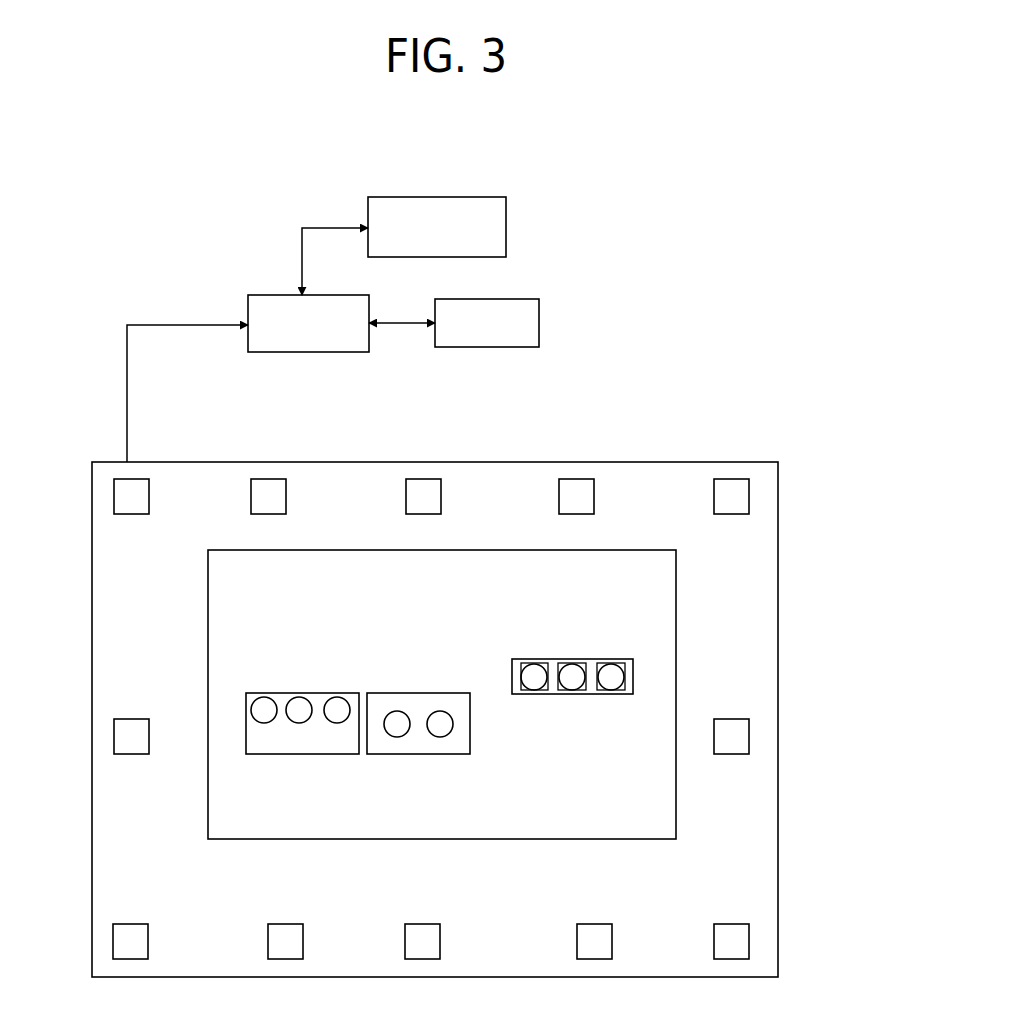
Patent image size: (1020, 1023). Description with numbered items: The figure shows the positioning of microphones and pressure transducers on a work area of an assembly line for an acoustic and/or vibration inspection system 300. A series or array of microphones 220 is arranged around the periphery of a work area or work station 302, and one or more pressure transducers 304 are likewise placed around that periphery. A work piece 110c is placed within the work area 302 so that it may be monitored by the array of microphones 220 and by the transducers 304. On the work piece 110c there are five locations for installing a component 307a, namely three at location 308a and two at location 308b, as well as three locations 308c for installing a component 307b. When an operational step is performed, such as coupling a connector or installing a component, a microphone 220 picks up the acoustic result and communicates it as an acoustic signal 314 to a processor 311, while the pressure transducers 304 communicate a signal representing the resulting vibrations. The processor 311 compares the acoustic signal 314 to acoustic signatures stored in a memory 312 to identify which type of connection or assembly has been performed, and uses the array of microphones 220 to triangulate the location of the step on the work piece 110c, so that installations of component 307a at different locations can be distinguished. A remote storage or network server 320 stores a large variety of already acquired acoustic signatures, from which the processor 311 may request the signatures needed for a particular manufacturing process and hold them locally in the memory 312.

The acoustic and/or vibration inspection system 300 is at (717, 201).
The remote storage or network server 320 is at (436, 197).
The processor 311 is at (290, 352).
The memory 312 is at (456, 347).
The acoustic signal 314 is at (187, 380).
The work area 302 is at (686, 977).
The work piece 110c is at (613, 550).
The microphone 220 is at (140, 514).
The pressure transducer 304 is at (268, 497).
The component 307a is at (282, 643).
The component 307b is at (573, 716).
The location 308a is at (264, 710).
The location 308b is at (397, 725).
The location 308c is at (611, 677).